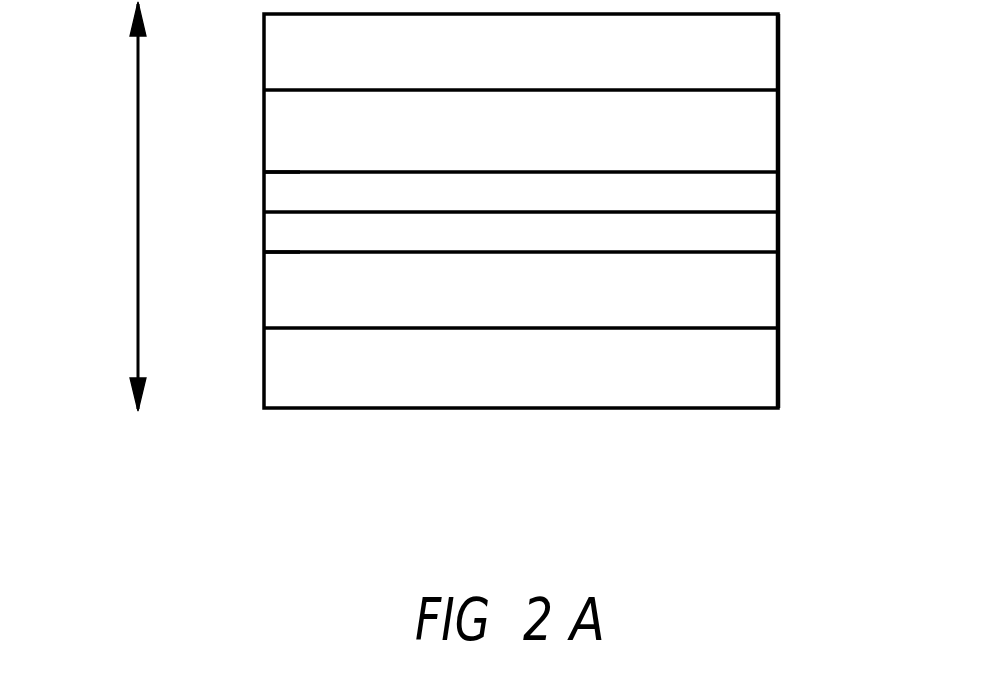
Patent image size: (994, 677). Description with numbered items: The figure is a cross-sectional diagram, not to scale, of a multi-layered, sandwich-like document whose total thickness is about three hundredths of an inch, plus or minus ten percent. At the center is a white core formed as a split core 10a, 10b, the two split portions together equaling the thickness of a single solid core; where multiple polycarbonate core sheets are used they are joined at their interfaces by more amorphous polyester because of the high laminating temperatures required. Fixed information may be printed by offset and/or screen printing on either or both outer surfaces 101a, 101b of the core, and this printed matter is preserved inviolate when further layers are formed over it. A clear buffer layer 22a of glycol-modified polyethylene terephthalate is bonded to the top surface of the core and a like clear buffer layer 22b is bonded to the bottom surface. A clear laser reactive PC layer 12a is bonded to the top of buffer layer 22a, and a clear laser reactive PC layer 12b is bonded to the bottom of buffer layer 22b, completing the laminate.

The clear laser reactive PC layer 12a is at (765, 72).
The clear buffer layer 22a is at (765, 149).
The split core 10a is at (765, 203).
The split core 10b is at (765, 243).
The clear buffer layer 22b is at (765, 306).
The clear laser reactive PC layer 12b is at (765, 376).
The outer surface of core layer 101a is at (286, 180).
The outer surface of core layer 101b is at (289, 252).